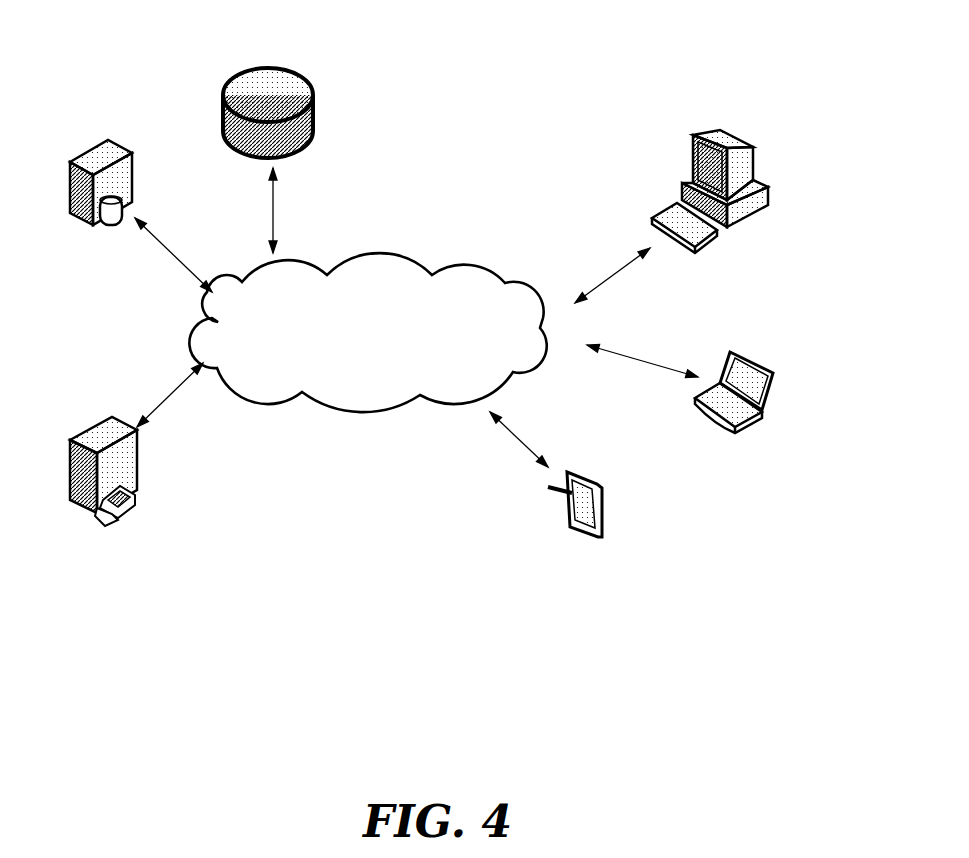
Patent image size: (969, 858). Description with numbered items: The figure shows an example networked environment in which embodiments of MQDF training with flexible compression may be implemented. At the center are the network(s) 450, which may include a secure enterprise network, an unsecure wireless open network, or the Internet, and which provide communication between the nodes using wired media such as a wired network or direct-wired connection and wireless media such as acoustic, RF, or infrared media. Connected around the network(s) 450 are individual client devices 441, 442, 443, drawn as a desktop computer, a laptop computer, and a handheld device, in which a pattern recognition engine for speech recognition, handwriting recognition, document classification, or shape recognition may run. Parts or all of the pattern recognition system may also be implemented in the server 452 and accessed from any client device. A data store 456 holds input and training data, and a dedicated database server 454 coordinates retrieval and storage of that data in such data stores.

The client device 441 is at (743, 133).
The client device 442 is at (773, 350).
The client device 443 is at (595, 465).
The network(s) 450 is at (380, 240).
The server 452 is at (107, 522).
The database server 454 is at (110, 228).
The data store 456 is at (282, 47).